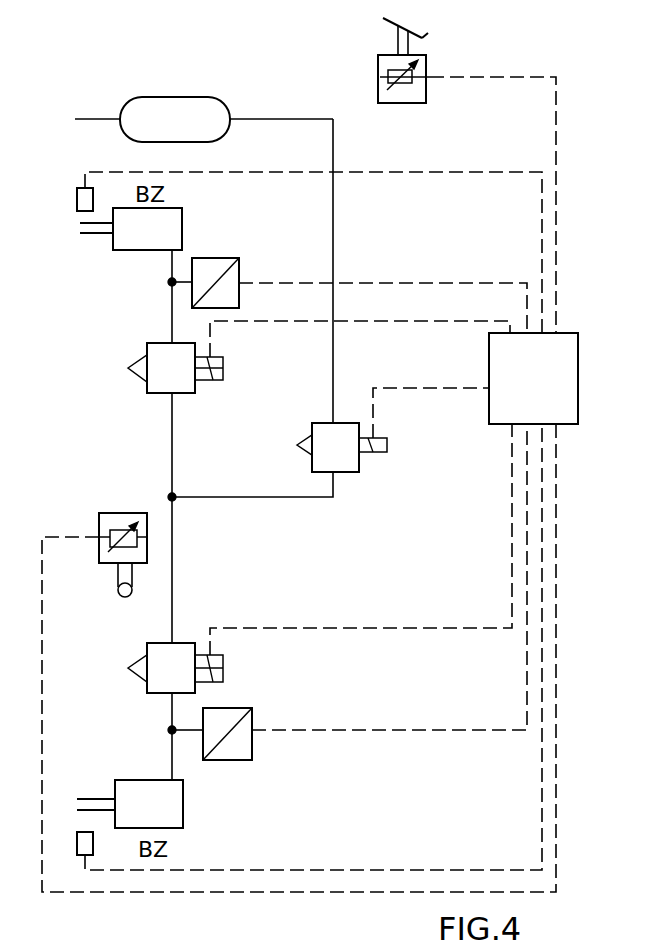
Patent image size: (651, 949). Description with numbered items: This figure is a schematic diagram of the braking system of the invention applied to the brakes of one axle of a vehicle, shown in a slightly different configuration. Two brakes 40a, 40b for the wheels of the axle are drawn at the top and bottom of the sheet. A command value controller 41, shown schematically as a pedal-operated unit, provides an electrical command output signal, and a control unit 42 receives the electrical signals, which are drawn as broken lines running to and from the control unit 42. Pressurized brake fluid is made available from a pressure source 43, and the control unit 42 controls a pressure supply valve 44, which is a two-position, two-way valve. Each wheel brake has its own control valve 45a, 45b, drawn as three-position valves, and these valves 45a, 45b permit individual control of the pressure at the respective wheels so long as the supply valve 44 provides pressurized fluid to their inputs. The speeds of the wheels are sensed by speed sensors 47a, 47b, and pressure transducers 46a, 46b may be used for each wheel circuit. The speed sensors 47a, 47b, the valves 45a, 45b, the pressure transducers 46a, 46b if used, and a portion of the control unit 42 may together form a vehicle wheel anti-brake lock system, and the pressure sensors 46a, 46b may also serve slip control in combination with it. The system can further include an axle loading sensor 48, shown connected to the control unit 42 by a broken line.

The brake 40a is at (182, 227).
The brake 40b is at (183, 802).
The command value controller 41 is at (378, 82).
The control unit 42 is at (578, 345).
The pressure source 43 is at (170, 97).
The pressure supply valve 44 is at (358, 473).
The control valve 45a is at (187, 396).
The control valve 45b is at (180, 643).
The pressure transducer 46a is at (238, 272).
The pressure transducer 46b is at (252, 718).
The speed sensor 47a is at (77, 187).
The speed sensor 47b is at (75, 830).
The axle loading sensor 48 is at (120, 513).